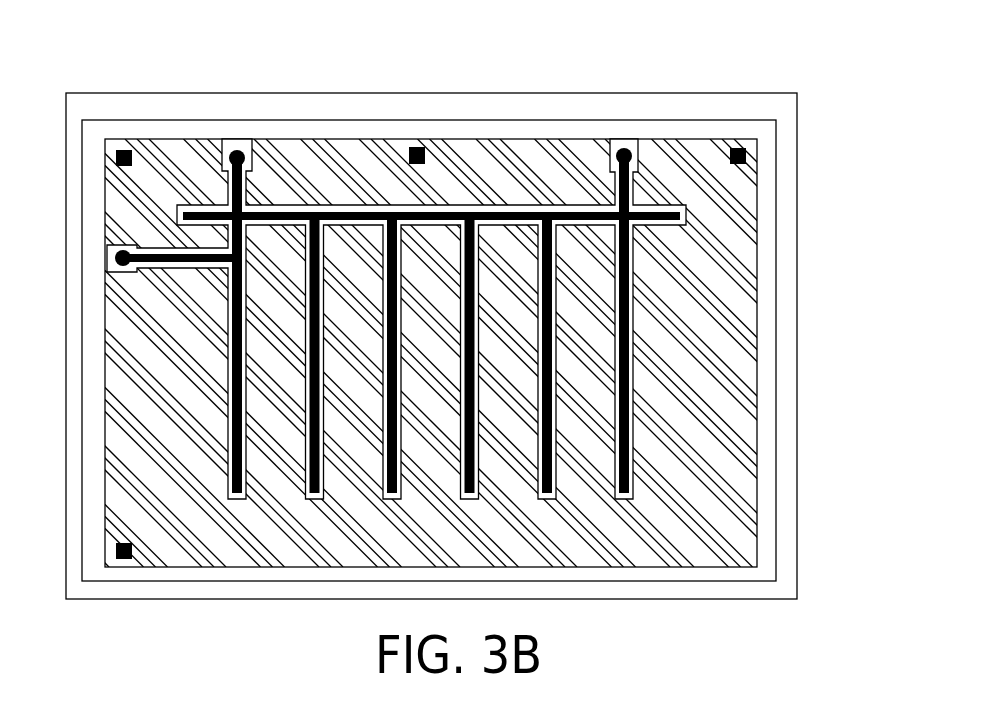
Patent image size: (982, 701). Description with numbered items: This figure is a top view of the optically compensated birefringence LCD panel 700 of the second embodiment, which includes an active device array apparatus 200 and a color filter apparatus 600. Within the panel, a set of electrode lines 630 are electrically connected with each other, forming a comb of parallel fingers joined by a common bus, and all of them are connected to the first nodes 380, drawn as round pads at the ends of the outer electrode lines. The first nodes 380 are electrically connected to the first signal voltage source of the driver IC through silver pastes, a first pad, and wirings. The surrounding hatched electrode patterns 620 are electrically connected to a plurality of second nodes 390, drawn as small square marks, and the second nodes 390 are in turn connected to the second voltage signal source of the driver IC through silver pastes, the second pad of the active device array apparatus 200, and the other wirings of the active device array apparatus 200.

The active device array apparatus 200 is at (799, 218).
The color filter apparatus 600 is at (778, 298).
The electrode patterns 620 is at (690, 433).
The electrode lines 630 is at (240, 344).
The first nodes 380 is at (625, 139).
The second nodes 390 is at (417, 147).
The optically compensated birefringence LCD panel 700 is at (858, 656).